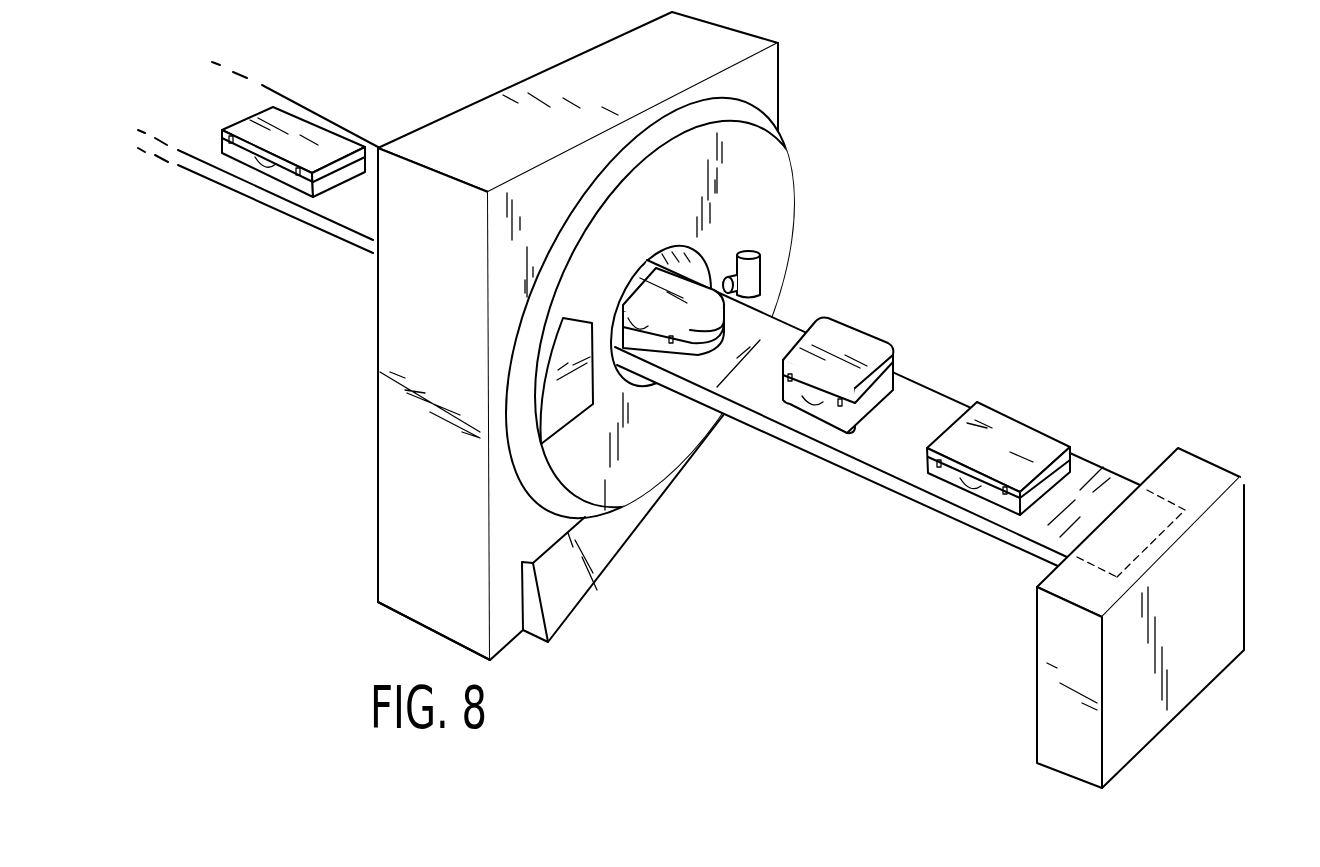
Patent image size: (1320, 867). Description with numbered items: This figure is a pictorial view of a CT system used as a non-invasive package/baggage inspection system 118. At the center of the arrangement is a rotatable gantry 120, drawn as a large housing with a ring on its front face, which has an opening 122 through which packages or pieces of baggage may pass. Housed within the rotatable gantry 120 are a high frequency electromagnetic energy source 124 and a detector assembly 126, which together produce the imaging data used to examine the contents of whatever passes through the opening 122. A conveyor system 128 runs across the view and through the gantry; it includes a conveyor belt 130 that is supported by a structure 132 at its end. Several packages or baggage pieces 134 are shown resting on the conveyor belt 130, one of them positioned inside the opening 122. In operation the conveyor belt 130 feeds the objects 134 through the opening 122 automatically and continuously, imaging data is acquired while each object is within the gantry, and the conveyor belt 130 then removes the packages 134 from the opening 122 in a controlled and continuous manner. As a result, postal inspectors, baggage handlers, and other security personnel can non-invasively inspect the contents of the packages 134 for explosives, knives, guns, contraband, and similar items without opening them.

The package/baggage inspection system 118 is at (690, 400).
The rotatable gantry 120 is at (612, 336).
The opening 122 is at (680, 262).
The high frequency electromagnetic energy source 124 is at (757, 272).
The detector assembly 126 is at (567, 417).
The conveyor system 128 is at (130, 180).
The conveyor belt 130 is at (672, 314).
The structure 132 is at (1230, 578).
The packages or baggage pieces 134 is at (672, 336).